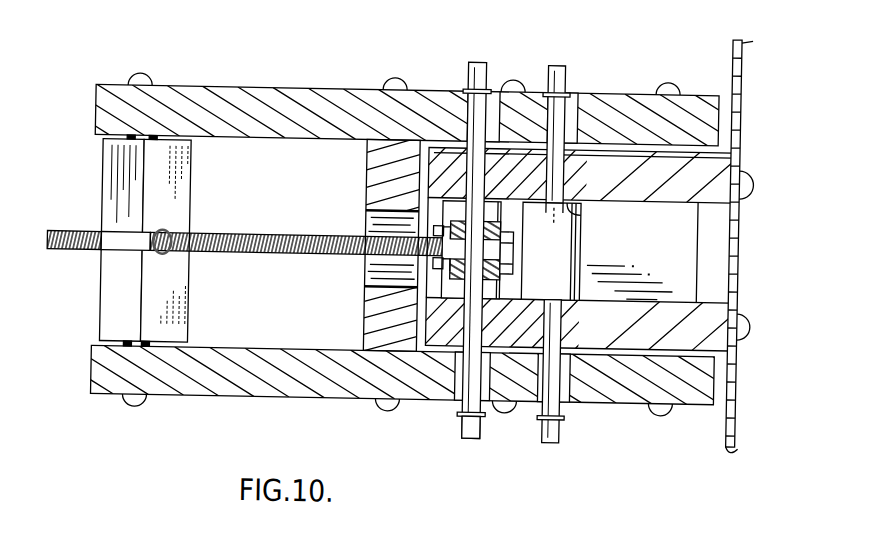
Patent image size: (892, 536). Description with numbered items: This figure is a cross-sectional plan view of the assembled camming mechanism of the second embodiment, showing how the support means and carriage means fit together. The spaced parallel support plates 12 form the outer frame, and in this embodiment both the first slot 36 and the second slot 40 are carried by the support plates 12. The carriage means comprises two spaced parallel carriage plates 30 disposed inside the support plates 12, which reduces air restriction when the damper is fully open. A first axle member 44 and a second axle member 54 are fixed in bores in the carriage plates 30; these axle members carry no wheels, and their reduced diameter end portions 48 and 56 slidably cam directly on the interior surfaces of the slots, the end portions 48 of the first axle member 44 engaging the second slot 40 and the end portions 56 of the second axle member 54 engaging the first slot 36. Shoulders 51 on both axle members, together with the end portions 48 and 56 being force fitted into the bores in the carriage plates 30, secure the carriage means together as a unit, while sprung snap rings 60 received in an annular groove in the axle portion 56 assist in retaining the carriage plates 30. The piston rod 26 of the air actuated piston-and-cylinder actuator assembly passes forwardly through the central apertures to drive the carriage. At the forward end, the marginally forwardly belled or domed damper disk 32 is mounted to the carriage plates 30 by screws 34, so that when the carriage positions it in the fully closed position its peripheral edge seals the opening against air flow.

The support plate 12 is at (276, 94).
The piston rod 26 is at (286, 236).
The carriage plate 30 is at (713, 203).
The damper disk 32 is at (740, 442).
The screw 34 is at (749, 192).
The first slot 36 is at (492, 99).
The second slot 40 is at (572, 102).
The first axle member 44 is at (568, 251).
The axle portion 48 is at (555, 62).
The shoulder 51 is at (582, 218).
The second axle member 54 is at (553, 254).
The axle portion 56 is at (474, 60).
The sprung snap ring 60 is at (452, 429).